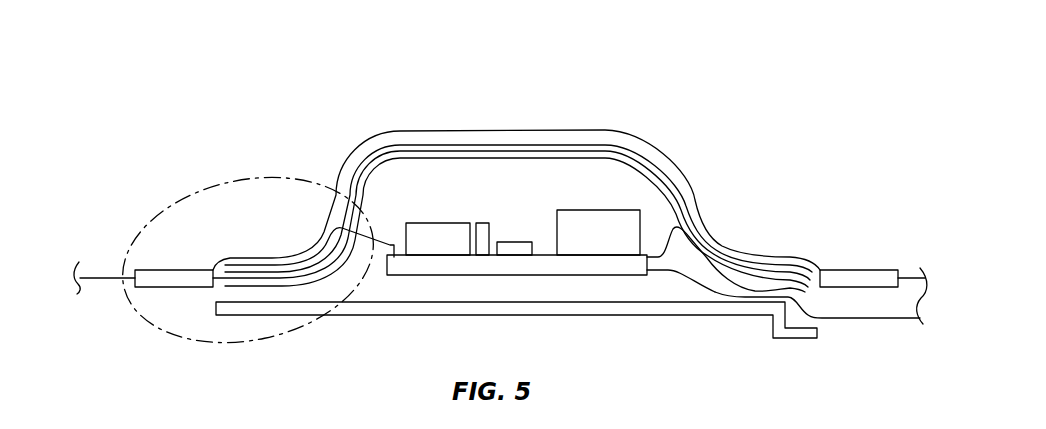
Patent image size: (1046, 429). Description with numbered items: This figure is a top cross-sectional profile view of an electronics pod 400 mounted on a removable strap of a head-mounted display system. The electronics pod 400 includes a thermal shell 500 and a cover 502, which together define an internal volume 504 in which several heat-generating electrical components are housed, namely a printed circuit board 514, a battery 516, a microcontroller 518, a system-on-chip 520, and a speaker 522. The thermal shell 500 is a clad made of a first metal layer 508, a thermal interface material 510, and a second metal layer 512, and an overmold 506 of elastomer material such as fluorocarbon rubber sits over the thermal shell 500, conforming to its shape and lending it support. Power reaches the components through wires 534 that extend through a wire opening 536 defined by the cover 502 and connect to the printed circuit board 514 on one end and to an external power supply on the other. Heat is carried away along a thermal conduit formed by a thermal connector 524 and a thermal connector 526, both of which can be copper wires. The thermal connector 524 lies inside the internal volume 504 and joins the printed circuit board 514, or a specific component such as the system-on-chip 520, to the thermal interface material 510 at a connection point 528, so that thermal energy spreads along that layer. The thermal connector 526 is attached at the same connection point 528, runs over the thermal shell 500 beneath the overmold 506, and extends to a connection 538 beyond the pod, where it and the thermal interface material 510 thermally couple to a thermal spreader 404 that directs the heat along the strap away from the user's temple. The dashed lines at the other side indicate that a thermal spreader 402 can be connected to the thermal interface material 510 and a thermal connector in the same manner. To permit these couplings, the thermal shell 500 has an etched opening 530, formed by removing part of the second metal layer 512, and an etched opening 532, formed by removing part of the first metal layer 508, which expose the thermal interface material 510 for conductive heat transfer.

The electronics pod 400 is at (352, 80).
The thermal spreader 402 is at (95, 277).
The thermal spreader 404 is at (916, 272).
The thermal shell 500 is at (516, 186).
The cover 502 is at (452, 315).
The internal volume 504 is at (562, 183).
The overmold 506 is at (622, 130).
The first metal layer 508 is at (641, 145).
The thermal interface material 510 is at (662, 168).
The second metal layer 512 is at (672, 185).
The printed circuit board 514 is at (550, 268).
The battery 516 is at (428, 228).
The microcontroller 518 is at (482, 225).
The system-on-chip 520 is at (516, 243).
The speaker 522 is at (577, 212).
The thermal connector 524 is at (680, 277).
The thermal connector 526 is at (700, 230).
The connection point 528 is at (684, 226).
The etched opening 530 is at (670, 222).
The etched opening 532 is at (690, 217).
The wire 534 is at (712, 287).
The wire opening 536 is at (823, 330).
The connection 538 is at (858, 272).